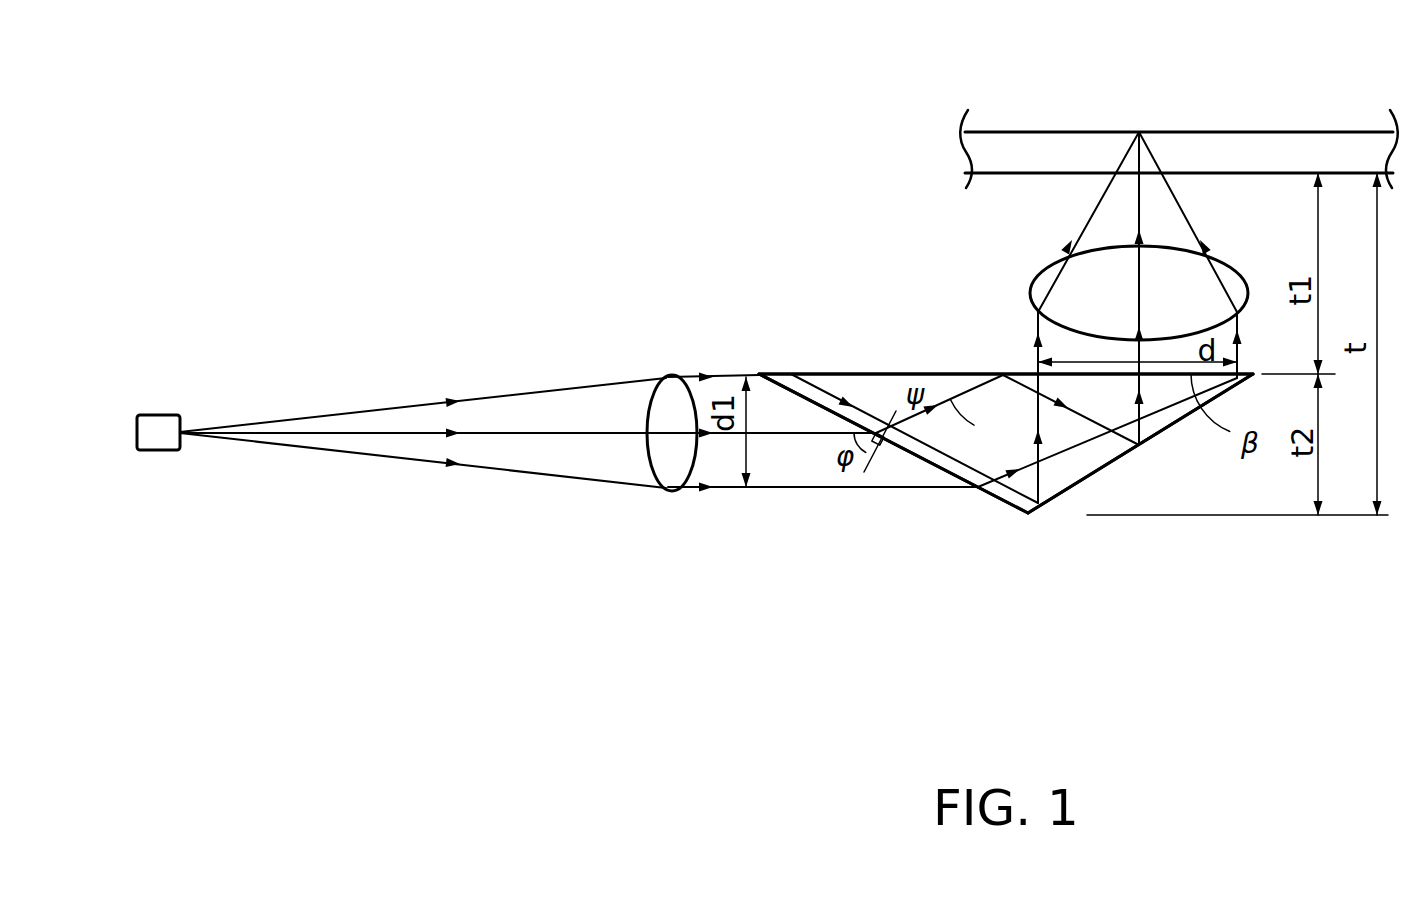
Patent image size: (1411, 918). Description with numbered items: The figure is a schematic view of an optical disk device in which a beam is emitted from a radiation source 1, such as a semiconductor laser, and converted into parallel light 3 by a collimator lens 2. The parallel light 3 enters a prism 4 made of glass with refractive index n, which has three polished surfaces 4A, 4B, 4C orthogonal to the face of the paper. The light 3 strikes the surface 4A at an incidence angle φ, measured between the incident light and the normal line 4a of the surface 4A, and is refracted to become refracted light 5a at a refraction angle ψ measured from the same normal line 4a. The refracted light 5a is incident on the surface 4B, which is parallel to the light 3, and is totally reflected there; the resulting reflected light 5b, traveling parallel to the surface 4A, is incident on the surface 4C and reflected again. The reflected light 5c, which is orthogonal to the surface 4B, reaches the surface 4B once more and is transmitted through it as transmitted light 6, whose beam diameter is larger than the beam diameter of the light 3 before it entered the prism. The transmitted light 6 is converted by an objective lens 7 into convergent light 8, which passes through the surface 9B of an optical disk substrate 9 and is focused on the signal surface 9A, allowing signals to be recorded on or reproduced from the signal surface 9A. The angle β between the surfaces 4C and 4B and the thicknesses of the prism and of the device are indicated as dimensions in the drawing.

The radiation source 1 is at (162, 438).
The collimator lens 2 is at (672, 492).
The parallel light 3 is at (780, 437).
The prism 4 is at (863, 368).
The surface of prism 4A is at (923, 457).
The normal line 4a is at (868, 465).
The surface of prism 4B is at (960, 372).
The surface of prism 4C is at (1173, 427).
The refracted light 5a is at (943, 423).
The reflected light 5b is at (1035, 389).
The reflected light 5c is at (1136, 403).
The transmitted light 6 is at (1140, 330).
The objective lens 7 is at (1247, 280).
The convergent light 8 is at (1141, 214).
The optical disk substrate 9 is at (1179, 143).
The signal surface 9A is at (1028, 132).
The surface of optical disk substrate 9B is at (1028, 173).